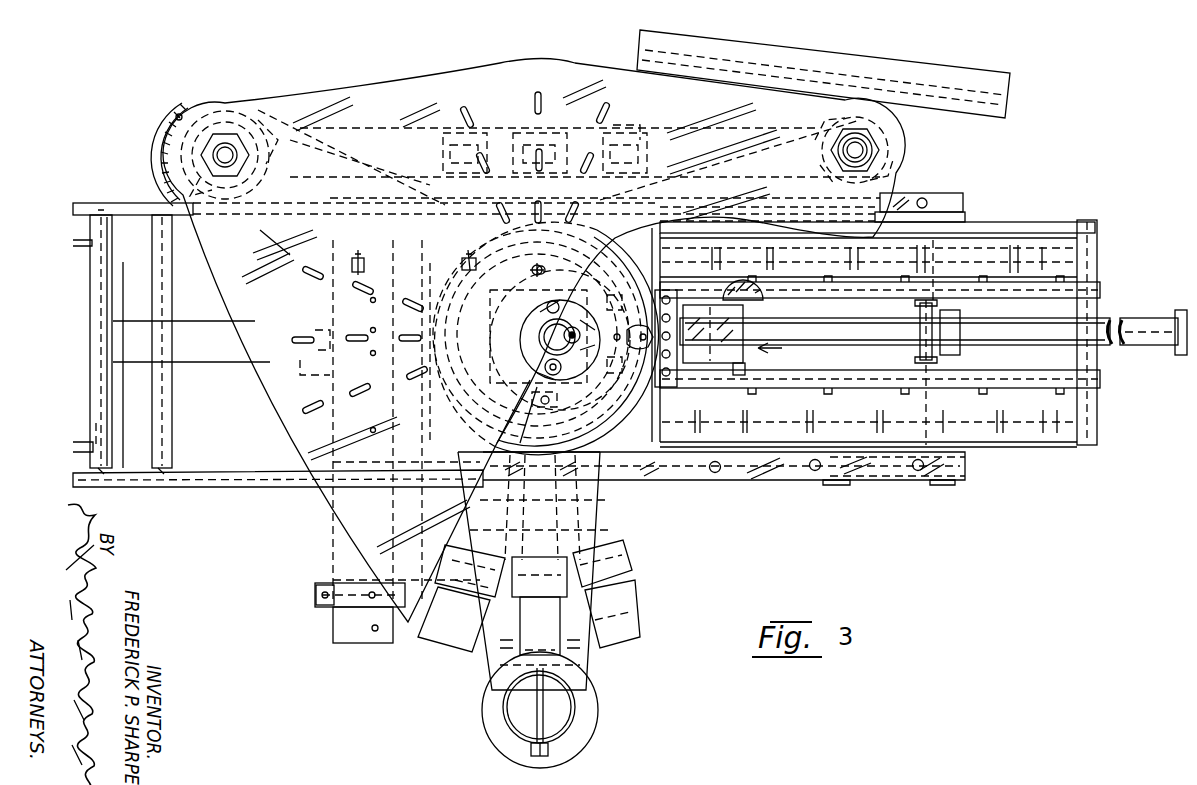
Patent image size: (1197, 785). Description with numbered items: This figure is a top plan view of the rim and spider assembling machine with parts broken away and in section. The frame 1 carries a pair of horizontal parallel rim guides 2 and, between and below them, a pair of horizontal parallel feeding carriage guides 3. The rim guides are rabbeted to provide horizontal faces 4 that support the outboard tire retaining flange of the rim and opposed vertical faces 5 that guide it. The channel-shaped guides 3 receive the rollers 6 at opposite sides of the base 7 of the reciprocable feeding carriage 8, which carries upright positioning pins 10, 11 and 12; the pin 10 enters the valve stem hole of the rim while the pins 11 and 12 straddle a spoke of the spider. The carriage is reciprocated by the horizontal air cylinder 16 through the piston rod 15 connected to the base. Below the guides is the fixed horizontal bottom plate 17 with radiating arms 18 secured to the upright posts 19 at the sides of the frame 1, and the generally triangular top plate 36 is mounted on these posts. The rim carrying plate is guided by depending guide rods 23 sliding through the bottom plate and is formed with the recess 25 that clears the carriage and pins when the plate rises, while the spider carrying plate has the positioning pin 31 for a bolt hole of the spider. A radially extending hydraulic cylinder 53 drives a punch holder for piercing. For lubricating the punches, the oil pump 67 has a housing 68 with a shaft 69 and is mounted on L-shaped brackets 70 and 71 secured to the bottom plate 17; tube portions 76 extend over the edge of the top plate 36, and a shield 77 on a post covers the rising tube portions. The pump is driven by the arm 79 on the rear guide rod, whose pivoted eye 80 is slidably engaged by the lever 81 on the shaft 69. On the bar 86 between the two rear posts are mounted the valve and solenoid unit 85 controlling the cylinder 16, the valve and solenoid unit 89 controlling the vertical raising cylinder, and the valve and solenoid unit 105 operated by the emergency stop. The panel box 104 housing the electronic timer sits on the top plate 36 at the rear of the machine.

The frame 1 is at (954, 185).
The rim guides 2 is at (952, 225).
The feeding carriage guides 3 is at (820, 292).
The horizontal longitudinally extending faces 4 is at (950, 233).
The vertical longitudinally extending faces 5 is at (945, 205).
The rollers 6 is at (748, 298).
The base 7 is at (740, 327).
The feeding carriage 8 is at (777, 348).
The positioning pin 10 is at (628, 337).
The positioning pin 11 is at (615, 358).
The positioning pin 12 is at (617, 311).
The piston rod 15 is at (820, 340).
The air cylinder 16 is at (1119, 311).
The bottom plate 17 is at (608, 483).
The radiating arms 18 is at (588, 652).
The upright posts 19 is at (172, 168).
The guide rods 23 is at (547, 269).
The recess 25 is at (546, 338).
The positioning pin 31 is at (572, 328).
The top plate 36 is at (325, 508).
The hydraulic cylinder 53 is at (628, 603).
The oil pump 67 is at (327, 545).
The housing 68 is at (342, 566).
The shaft 69 is at (312, 272).
The L-shaped bracket 70 is at (322, 612).
The L-shaped bracket 71 is at (306, 370).
The parallel portions of tubes 76 is at (165, 135).
The shield 77 is at (177, 112).
The arm 79 is at (510, 272).
The eye 80 is at (476, 262).
The lever 81 is at (368, 252).
The valve and solenoid unit 85 is at (622, 130).
The bar 86 is at (665, 130).
The valve and solenoid unit 89 is at (550, 127).
The panel box 104 is at (962, 85).
The valve and solenoid unit 105 is at (447, 118).